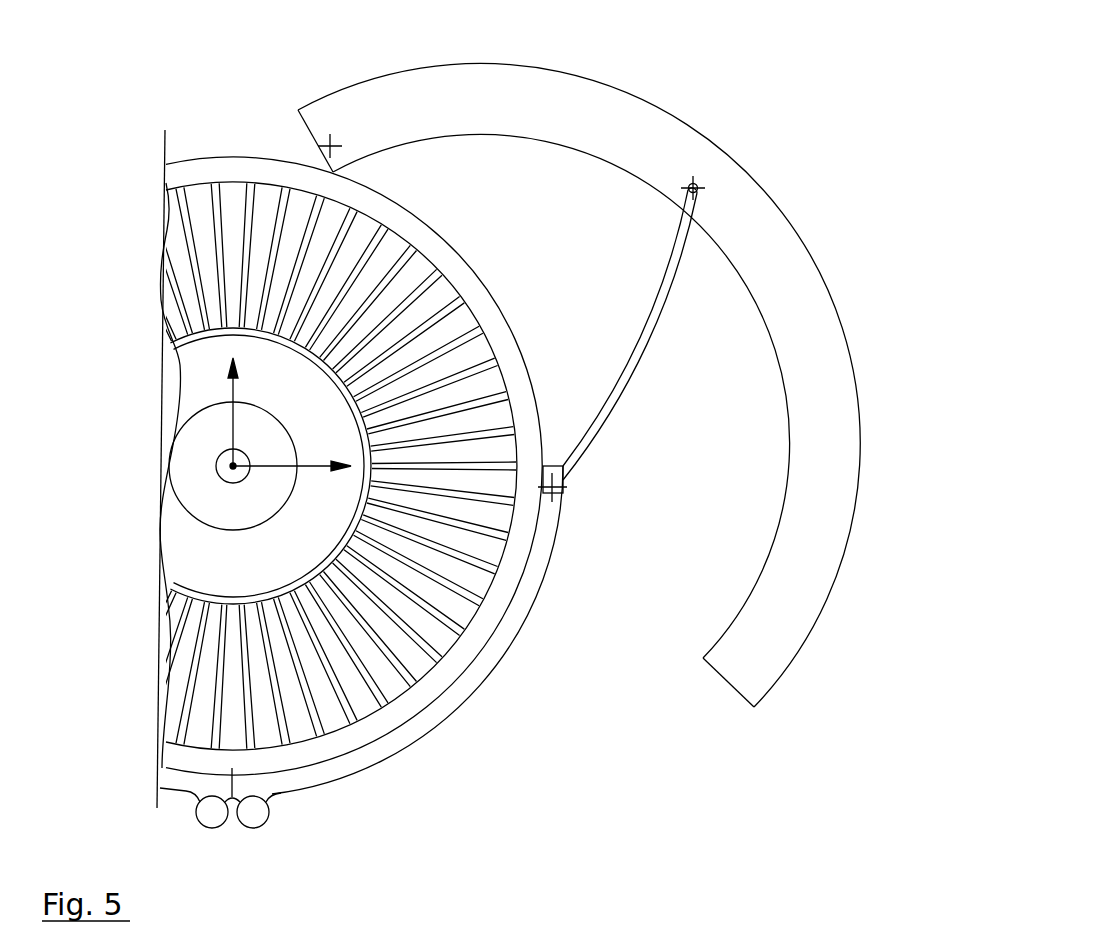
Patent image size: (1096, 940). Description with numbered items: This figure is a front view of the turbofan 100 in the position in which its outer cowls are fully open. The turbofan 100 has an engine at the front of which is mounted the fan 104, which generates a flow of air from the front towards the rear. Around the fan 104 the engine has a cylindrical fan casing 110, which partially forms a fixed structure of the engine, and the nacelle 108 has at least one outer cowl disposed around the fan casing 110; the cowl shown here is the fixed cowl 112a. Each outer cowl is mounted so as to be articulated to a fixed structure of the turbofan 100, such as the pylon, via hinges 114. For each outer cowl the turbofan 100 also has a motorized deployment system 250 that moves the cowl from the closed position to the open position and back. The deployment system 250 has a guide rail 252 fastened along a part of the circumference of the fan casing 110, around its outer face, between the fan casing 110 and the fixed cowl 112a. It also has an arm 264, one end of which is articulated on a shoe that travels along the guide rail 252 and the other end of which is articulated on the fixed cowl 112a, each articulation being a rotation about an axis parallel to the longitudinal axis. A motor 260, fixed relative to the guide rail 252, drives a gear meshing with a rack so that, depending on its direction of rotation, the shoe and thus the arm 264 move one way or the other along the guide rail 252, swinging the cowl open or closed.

The turbofan 100 is at (788, 69).
The fan 104 is at (195, 678).
The nacelle 108 is at (829, 186).
The fan casing 110 is at (173, 176).
The fixed cowl 112a is at (746, 654).
The hinge 114 is at (322, 146).
The deployment system 250 is at (640, 505).
The guide rail 252 is at (485, 660).
The motor 260 is at (258, 812).
The arm 264 is at (653, 323).